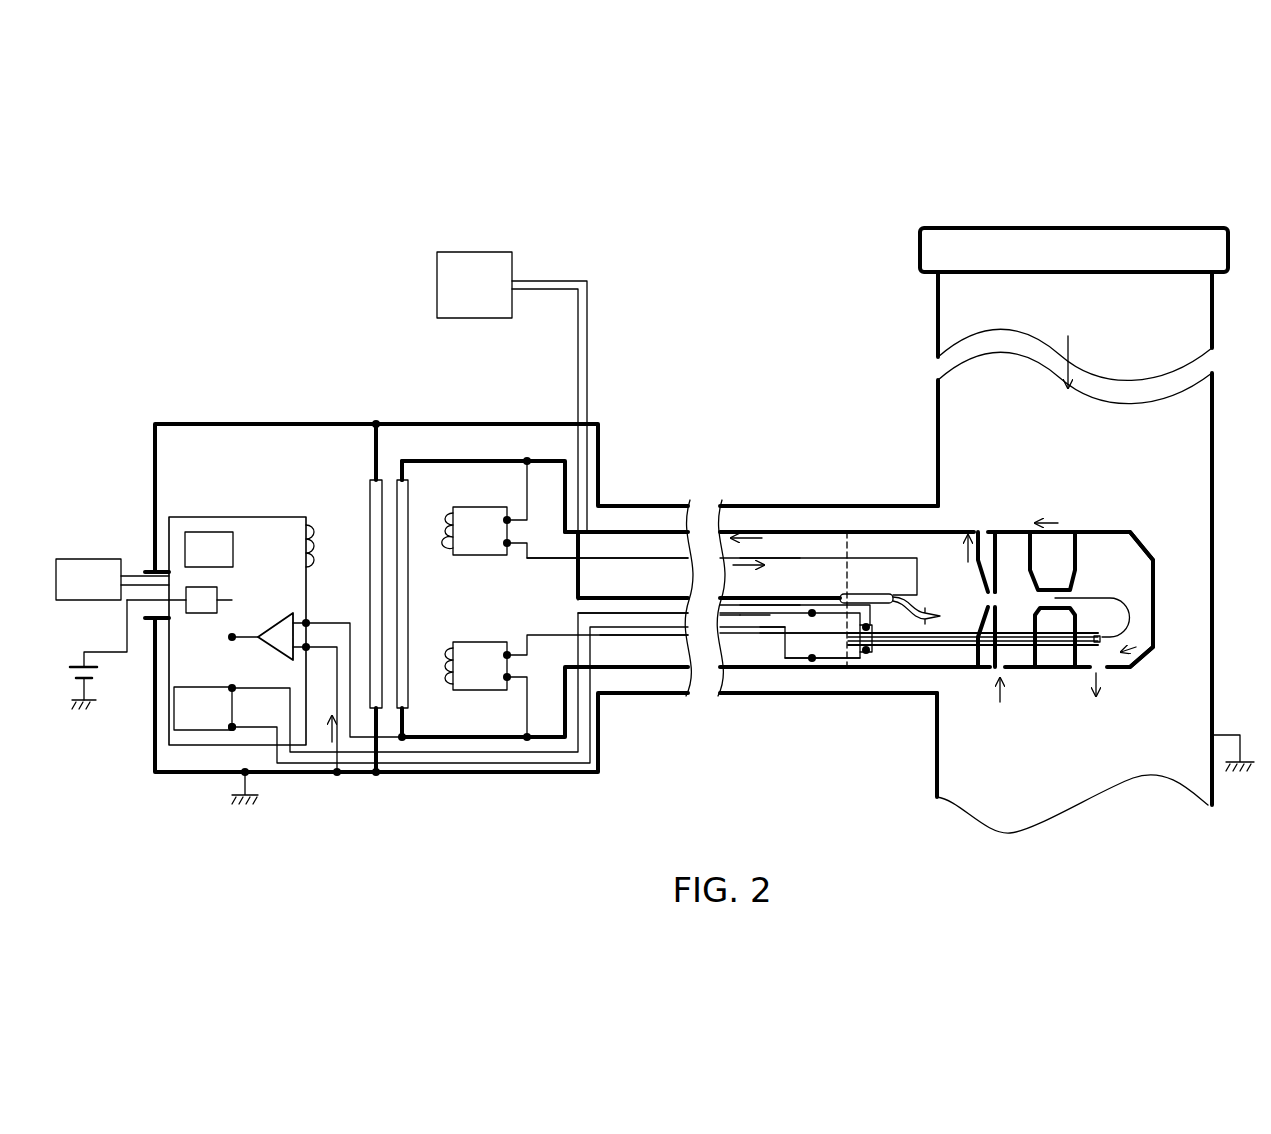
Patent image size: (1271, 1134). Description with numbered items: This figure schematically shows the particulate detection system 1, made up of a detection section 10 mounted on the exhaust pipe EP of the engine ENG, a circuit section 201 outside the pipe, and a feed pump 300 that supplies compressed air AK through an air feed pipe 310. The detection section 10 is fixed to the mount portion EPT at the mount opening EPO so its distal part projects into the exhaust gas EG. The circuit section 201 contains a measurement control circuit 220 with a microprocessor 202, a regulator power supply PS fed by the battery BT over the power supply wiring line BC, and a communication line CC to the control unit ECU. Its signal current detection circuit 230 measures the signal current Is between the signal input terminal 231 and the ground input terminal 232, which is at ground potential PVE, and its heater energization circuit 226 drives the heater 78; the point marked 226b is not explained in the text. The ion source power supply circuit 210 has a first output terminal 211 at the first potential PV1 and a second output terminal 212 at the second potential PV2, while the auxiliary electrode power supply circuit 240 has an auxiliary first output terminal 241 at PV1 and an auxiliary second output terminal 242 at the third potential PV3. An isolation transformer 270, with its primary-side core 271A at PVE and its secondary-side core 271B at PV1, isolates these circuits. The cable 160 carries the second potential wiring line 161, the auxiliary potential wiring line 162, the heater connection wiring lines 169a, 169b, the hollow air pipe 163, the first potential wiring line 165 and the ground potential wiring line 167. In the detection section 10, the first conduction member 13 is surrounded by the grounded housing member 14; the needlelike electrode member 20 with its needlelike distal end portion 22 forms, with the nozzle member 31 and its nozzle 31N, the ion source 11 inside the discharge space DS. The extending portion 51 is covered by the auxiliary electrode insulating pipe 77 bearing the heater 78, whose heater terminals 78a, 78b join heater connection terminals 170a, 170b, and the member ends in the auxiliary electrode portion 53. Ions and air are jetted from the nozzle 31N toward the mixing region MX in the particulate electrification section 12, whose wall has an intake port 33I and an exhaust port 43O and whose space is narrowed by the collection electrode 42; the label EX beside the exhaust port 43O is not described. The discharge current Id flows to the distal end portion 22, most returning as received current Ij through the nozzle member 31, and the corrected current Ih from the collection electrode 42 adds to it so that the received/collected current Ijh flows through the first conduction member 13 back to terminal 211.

The particulate detection system 1 is at (194, 324).
The circuit section 201 is at (274, 451).
The control unit ECU is at (88, 579).
The communication line CC is at (143, 572).
The external battery BT is at (78, 669).
The power supply wiring line BC is at (127, 648).
The measurement control circuit 220 is at (241, 631).
The microprocessor 202 is at (209, 549).
The regulator power supply PS is at (209, 600).
The signal current detection circuit 230 is at (270, 620).
The signal input terminal 231 is at (309, 621).
The ground input terminal 232 is at (303, 649).
The signal current Is is at (321, 728).
The heater energization circuit 226 is at (431, 688).
The detection circuit terminal 226b is at (235, 725).
The ground potential PVE is at (741, 786).
The isolation transformer 270 is at (386, 430).
The primary-side core 271A is at (371, 712).
The secondary-side core 271B is at (408, 712).
The ion source power supply circuit 210 is at (545, 599).
The first output terminal 211 is at (511, 517).
The second output terminal 212 is at (511, 548).
The auxiliary electrode power supply circuit 240 is at (476, 666).
The auxiliary second output terminal 242 is at (511, 652).
The auxiliary first output terminal 241 is at (508, 681).
The feed pump 300 is at (474, 285).
The air feed pipe 310 is at (537, 278).
The cable 160 is at (650, 485).
The first potential PV1 is at (612, 536).
The second potential PV2 is at (612, 562).
The third potential PV3 is at (641, 641).
The air pipe 163 is at (619, 604).
The first potential wiring line 165 is at (662, 670).
The received/collected current Ijh is at (747, 547).
The discharge current Id is at (748, 576).
The needlelike electrode member 20 is at (814, 606).
The needlelike distal end portion 22 is at (906, 558).
The ion source 11 is at (970, 579).
The auxiliary electrode insulating pipe 77 is at (811, 608).
The heater terminal 78a is at (845, 594).
The compressed air AK is at (915, 613).
The heater 78 is at (870, 654).
The heater terminal 78b is at (835, 662).
The heater connection terminal 170b is at (789, 667).
The heater connection terminal 170a is at (781, 604).
The second potential wiring line 161 is at (763, 557).
The ground potential wiring line 167 is at (724, 531).
The auxiliary potential wiring line 162 is at (755, 620).
The first heater connection wiring line 169a is at (743, 622).
The second heater connection wiring line 169b is at (767, 627).
The first conduction member 13 is at (841, 668).
The extending portion 51 is at (903, 648).
The housing member 14 is at (918, 695).
The nozzle member 31 is at (978, 531).
The nozzle 31N is at (998, 587).
The mixing region MX is at (1014, 580).
The received current Ij is at (961, 550).
The corrected current Ih is at (1047, 511).
The detection section 10 is at (1079, 529).
The collection electrode 42 is at (1077, 552).
The particulate electrification section 12 is at (1069, 675).
The intake port 33I is at (1005, 673).
The exhaust port 43O is at (1109, 672).
The auxiliary electrode portion 53 is at (1098, 598).
The exhaust outlet EX is at (1138, 656).
The discharge space DS is at (967, 607).
The mount opening EPO is at (937, 692).
The mount portion EPT is at (932, 790).
The internal combustion engine ENG is at (1074, 250).
The exhaust gas EG is at (1067, 347).
The exhaust pipe EP is at (1214, 514).